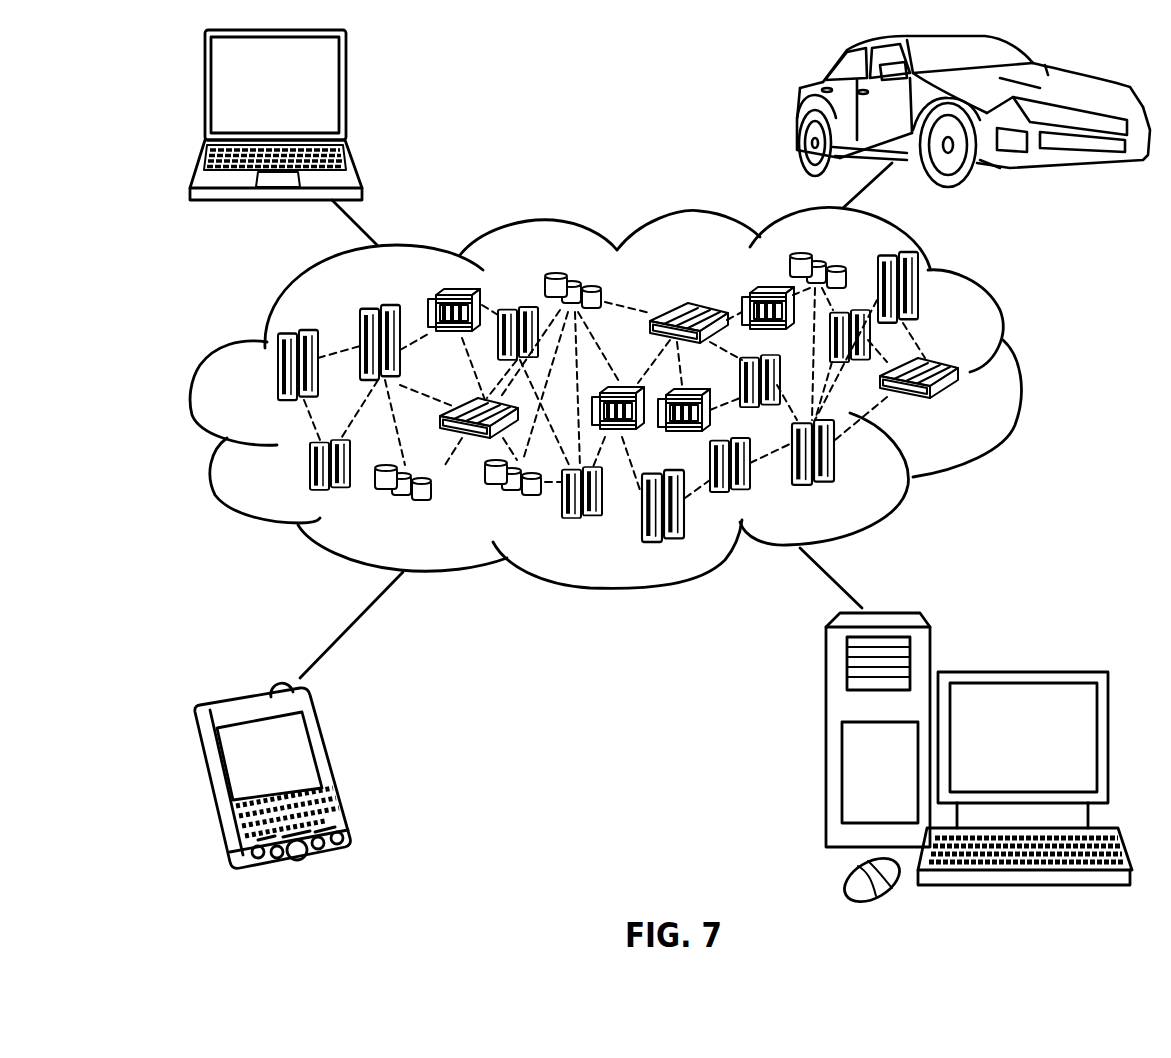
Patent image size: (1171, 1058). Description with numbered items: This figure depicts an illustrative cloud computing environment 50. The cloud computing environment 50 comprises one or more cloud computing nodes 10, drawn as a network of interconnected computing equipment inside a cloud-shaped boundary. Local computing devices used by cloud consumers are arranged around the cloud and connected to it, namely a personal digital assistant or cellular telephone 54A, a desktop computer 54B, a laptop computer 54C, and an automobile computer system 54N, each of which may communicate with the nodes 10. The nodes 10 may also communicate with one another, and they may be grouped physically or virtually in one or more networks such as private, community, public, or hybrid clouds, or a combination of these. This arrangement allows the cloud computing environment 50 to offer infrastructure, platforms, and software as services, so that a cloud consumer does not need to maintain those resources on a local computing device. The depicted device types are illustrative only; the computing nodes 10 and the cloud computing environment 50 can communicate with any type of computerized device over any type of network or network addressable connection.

The cloud computing nodes 10 is at (958, 403).
The cloud computing environment 50 is at (1022, 375).
The personal digital assistant (PDA) or cellular telephone 54A is at (338, 770).
The desktop computer 54B is at (1020, 670).
The laptop computer 54C is at (346, 92).
The automobile computer system 54N is at (797, 108).